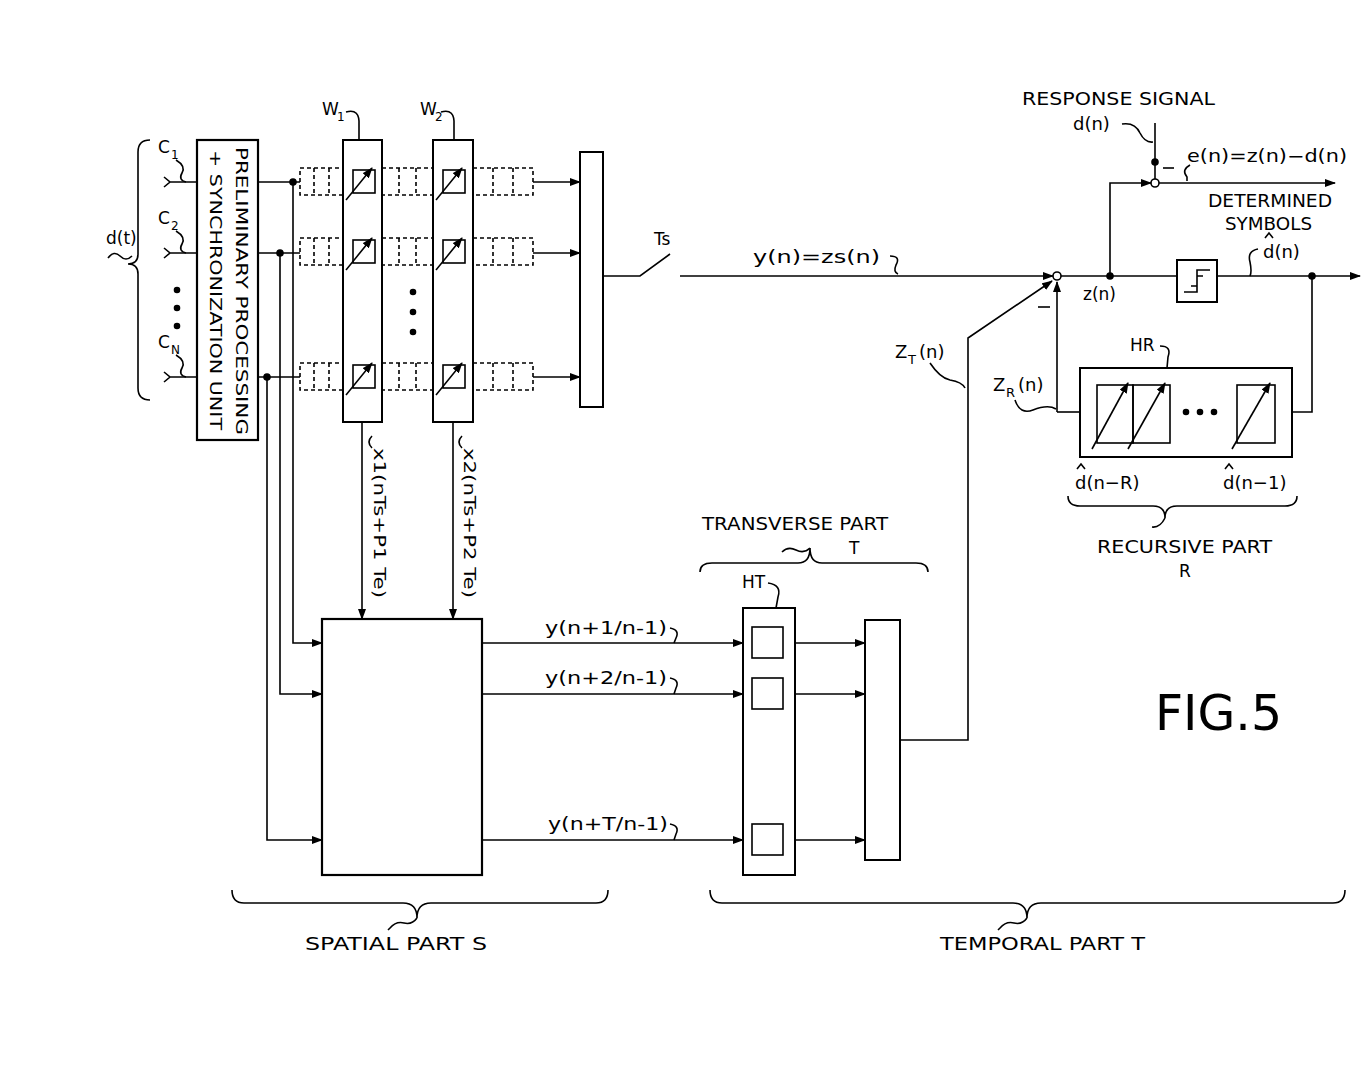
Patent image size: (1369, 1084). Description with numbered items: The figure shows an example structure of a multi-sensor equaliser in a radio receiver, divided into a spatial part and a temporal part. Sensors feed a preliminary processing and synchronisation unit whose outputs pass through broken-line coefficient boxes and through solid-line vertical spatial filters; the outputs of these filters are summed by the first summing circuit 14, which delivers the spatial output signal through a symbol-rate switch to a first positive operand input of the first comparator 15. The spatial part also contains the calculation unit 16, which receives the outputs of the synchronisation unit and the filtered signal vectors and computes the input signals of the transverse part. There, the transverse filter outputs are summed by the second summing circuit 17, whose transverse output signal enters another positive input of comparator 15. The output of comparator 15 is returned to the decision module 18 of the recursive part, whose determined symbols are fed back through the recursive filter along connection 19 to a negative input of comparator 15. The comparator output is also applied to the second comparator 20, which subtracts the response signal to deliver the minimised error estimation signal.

The first summing circuit 14 is at (605, 180).
The first comparator 15 is at (1060, 273).
The calculation unit 16 is at (484, 752).
The second summing circuit 17 is at (901, 810).
The decision module 18 is at (1197, 260).
The feedback connection of determined symbols to recursive part 19 is at (1313, 350).
The second comparator 20 is at (1155, 188).